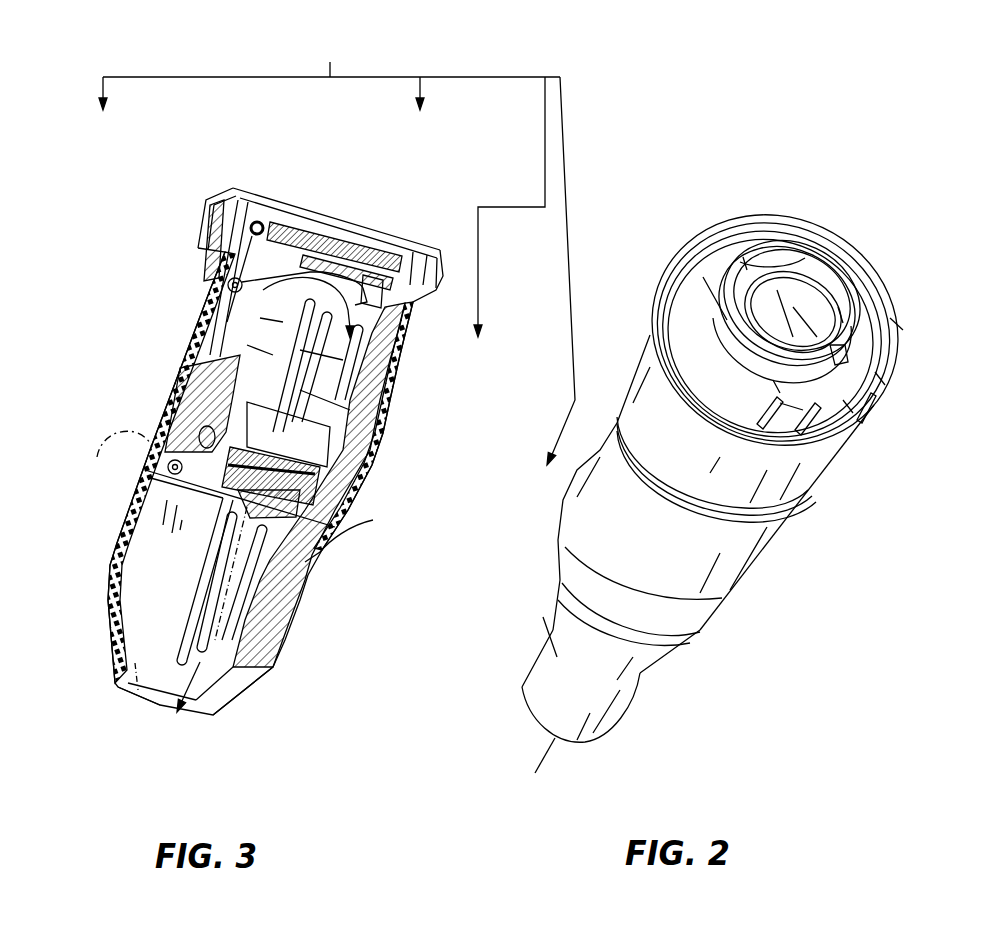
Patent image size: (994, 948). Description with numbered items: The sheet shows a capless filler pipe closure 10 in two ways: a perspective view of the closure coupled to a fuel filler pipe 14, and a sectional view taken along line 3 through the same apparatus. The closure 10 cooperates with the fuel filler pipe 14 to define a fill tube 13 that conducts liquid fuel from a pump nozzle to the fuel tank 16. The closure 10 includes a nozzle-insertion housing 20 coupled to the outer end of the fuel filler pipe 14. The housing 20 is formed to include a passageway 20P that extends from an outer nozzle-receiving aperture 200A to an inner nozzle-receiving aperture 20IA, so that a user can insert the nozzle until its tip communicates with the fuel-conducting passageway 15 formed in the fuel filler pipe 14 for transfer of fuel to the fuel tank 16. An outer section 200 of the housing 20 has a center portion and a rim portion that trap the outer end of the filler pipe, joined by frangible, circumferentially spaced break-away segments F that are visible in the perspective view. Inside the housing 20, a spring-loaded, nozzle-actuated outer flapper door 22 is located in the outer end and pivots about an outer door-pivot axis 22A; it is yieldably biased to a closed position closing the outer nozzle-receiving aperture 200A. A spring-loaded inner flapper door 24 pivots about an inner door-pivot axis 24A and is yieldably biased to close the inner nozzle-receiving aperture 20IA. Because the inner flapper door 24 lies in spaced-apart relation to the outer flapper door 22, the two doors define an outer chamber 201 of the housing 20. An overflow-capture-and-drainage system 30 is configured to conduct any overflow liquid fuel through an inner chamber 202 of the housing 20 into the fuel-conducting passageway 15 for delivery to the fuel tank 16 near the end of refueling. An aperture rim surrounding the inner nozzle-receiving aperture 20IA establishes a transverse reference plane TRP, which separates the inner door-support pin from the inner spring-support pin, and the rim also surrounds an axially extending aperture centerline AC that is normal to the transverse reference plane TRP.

In FIG. 3, the capless filler pipe closure 10 is at (476, 18).
In FIG. 2, the capless filler pipe closure 10 is at (578, 128).
In FIG. 2, the fill tube 13 is at (819, 657).
In FIG. 3, the fuel filler pipe 14 is at (270, 680).
In FIG. 2, the fuel filler pipe 14 is at (755, 697).
In FIG. 3, the fuel-conducting passageway 15 is at (169, 826).
In FIG. 3, the fuel tank 16 is at (58, 762).
In FIG. 2, the fuel tank 16 is at (578, 810).
In FIG. 3, the nozzle-insertion housing 20 is at (62, 112).
In FIG. 2, the nozzle-insertion housing 20 is at (879, 249).
In FIG. 3, the passageway 20P is at (200, 278).
In FIG. 2, the outer section 200 is at (650, 310).
In FIG. 3, the outer nozzle-receiving aperture 200A is at (400, 242).
In FIG. 2, the outer nozzle-receiving aperture 200A is at (770, 268).
In FIG. 3, the outer chamber 201 is at (213, 332).
In FIG. 3, the inner chamber 202 is at (157, 548).
In FIG. 3, the inner nozzle-receiving aperture 20IA is at (200, 628).
In FIG. 3, the outer flapper door 22 is at (526, 111).
In FIG. 2, the outer flapper door 22 is at (746, 176).
In FIG. 3, the outer door-pivot axis 22A is at (247, 187).
In FIG. 3, the inner flapper door 24 is at (418, 434).
In FIG. 3, the inner door-pivot axis 24A is at (288, 434).
In FIG. 3, the overflow-capture-and-drainage system 30 is at (482, 594).
In FIG. 3, the transverse reference plane TRP is at (97, 457).
In FIG. 3, the aperture centerline AC is at (287, 553).
In FIG. 2, the break-away segments F is at (897, 323).
In FIG. 2, the section line 3- 3 is at (725, 192).